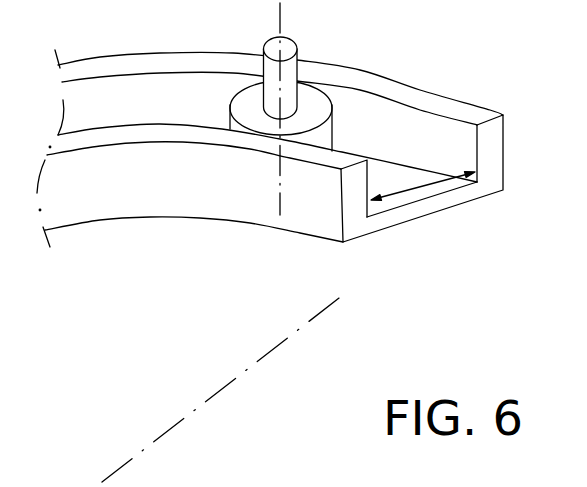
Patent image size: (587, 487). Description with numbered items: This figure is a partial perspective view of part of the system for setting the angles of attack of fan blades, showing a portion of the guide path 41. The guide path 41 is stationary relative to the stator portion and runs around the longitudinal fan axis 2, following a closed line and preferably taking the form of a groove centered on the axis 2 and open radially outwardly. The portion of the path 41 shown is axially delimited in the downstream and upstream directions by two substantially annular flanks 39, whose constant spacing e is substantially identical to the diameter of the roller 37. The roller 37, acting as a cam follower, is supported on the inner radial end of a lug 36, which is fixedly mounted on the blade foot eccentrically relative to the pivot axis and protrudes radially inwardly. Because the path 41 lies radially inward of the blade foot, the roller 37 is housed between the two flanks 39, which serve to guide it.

The lug 36 is at (263, 72).
The roller 37 is at (315, 111).
The annular flanks 39 is at (371, 182).
The guide path 41 is at (425, 177).
The constant spacing e is at (436, 183).
The longitudinal fan axis 2 is at (223, 388).